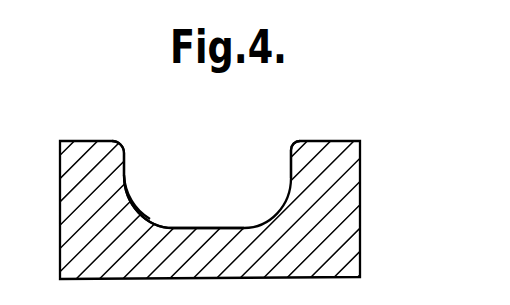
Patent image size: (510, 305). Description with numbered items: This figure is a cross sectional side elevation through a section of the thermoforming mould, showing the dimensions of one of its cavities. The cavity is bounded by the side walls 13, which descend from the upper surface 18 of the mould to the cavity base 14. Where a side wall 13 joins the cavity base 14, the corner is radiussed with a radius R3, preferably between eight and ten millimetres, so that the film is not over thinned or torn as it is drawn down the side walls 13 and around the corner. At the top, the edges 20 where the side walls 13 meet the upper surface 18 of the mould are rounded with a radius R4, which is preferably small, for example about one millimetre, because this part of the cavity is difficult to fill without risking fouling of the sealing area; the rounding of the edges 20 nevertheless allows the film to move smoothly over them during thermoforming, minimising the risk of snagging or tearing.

The upper surface of the mould 18 is at (328, 141).
The edges 20 is at (123, 141).
The side walls 13 is at (127, 164).
The radius of the corner R3 is at (147, 210).
The cavity base 14 is at (165, 223).
The radius of the edge R4 is at (291, 140).